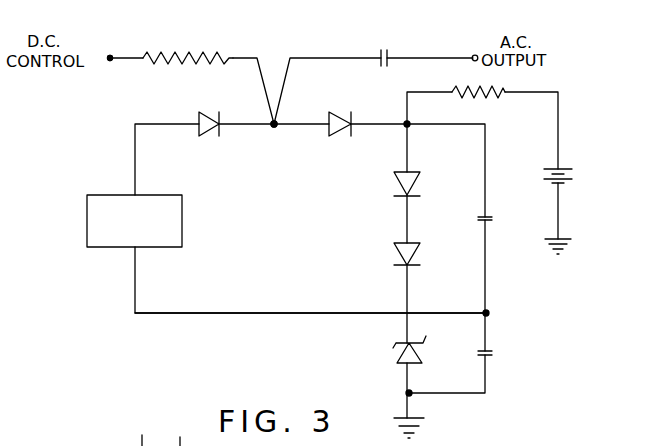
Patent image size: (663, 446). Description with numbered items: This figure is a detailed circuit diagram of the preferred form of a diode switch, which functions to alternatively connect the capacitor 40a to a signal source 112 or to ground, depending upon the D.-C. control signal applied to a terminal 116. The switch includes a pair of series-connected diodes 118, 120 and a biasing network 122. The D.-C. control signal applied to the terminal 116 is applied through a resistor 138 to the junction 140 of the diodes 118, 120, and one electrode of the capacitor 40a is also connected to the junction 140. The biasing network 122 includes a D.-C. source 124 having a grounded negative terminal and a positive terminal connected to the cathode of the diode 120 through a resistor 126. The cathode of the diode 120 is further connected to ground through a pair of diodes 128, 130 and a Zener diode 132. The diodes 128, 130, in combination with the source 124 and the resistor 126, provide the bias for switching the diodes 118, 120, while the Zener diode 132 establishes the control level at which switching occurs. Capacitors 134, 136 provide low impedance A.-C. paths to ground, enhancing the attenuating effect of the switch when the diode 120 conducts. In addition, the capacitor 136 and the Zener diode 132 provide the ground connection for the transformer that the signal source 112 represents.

The signal source 112 is at (184, 210).
The terminal 116 is at (112, 56).
The diode 118 is at (204, 138).
The diode 120 is at (335, 132).
The biasing network 122 is at (520, 331).
The D.-C. source 124 is at (578, 178).
The resistor 126 is at (478, 100).
The diode 128 is at (395, 184).
The diode 130 is at (395, 253).
The Zener diode 132 is at (397, 355).
The capacitor 134 is at (480, 225).
The capacitor 136 is at (492, 357).
The resistor 138 is at (188, 58).
The junction 140 is at (284, 116).
The capacitor 40a is at (392, 55).